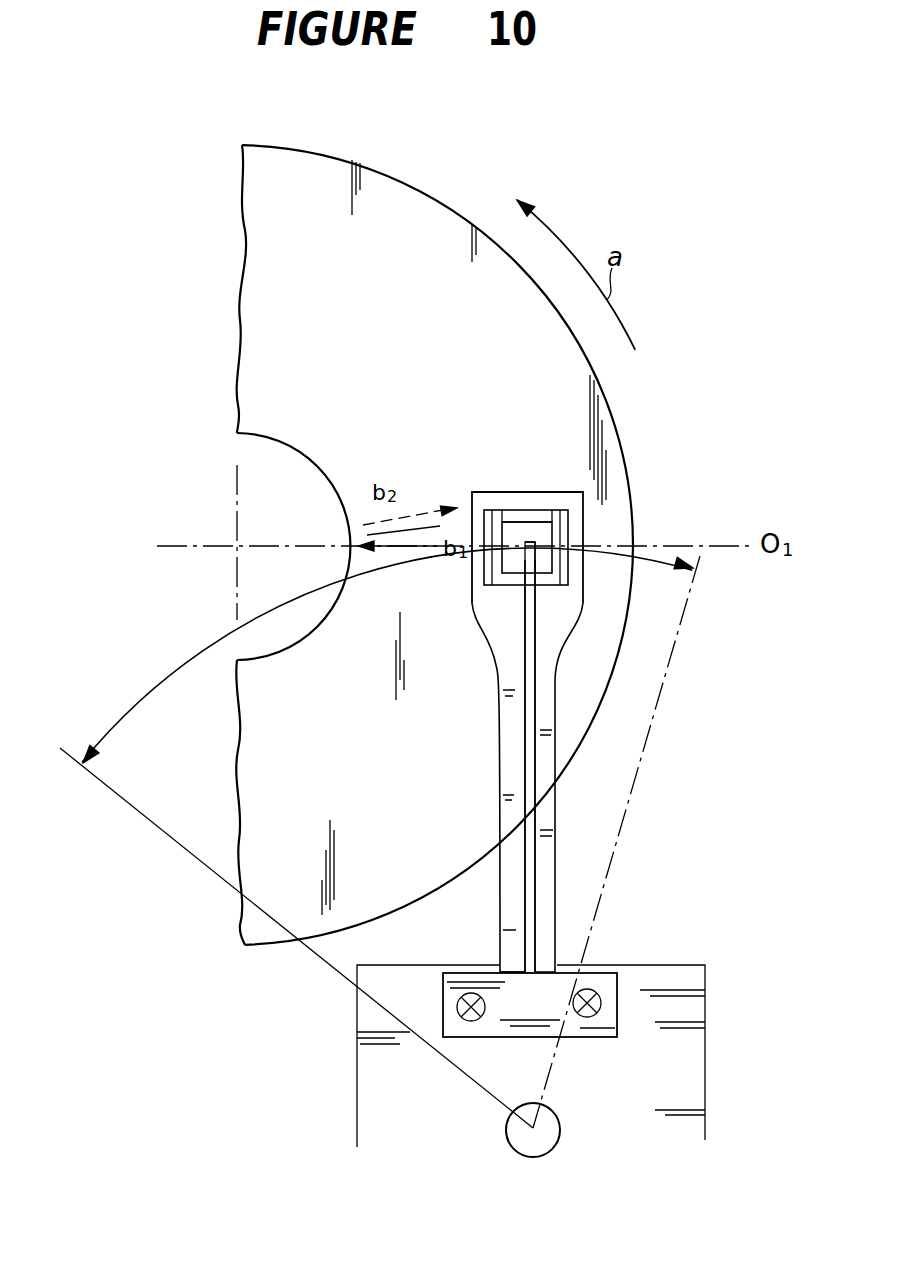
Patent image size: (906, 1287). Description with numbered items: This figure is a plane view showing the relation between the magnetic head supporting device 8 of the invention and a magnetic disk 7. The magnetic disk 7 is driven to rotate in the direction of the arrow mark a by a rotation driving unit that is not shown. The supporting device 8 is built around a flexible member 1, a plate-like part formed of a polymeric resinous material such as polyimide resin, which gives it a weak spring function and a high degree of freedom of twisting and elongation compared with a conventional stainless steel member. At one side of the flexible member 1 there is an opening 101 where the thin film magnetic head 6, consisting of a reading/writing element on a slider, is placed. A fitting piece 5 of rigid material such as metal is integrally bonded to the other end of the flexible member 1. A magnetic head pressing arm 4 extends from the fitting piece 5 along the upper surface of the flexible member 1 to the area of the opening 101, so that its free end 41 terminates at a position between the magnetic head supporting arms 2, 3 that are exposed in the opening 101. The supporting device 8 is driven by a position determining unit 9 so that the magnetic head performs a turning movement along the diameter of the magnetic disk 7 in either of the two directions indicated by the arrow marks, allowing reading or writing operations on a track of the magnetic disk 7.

The flexible member 1 is at (545, 864).
The magnetic head supporting arm 2 is at (560, 541).
The magnetic head supporting arm 3 is at (485, 560).
The magnetic head pressing arm 4 is at (530, 766).
The fitting piece 5 is at (590, 973).
The thin film magnetic head 6 is at (533, 530).
The magnetic disk 7 is at (357, 193).
The magnetic head supporting device 8 is at (568, 822).
The position determining unit 9 is at (677, 1012).
The free end 41 is at (485, 560).
The opening 101 is at (520, 510).